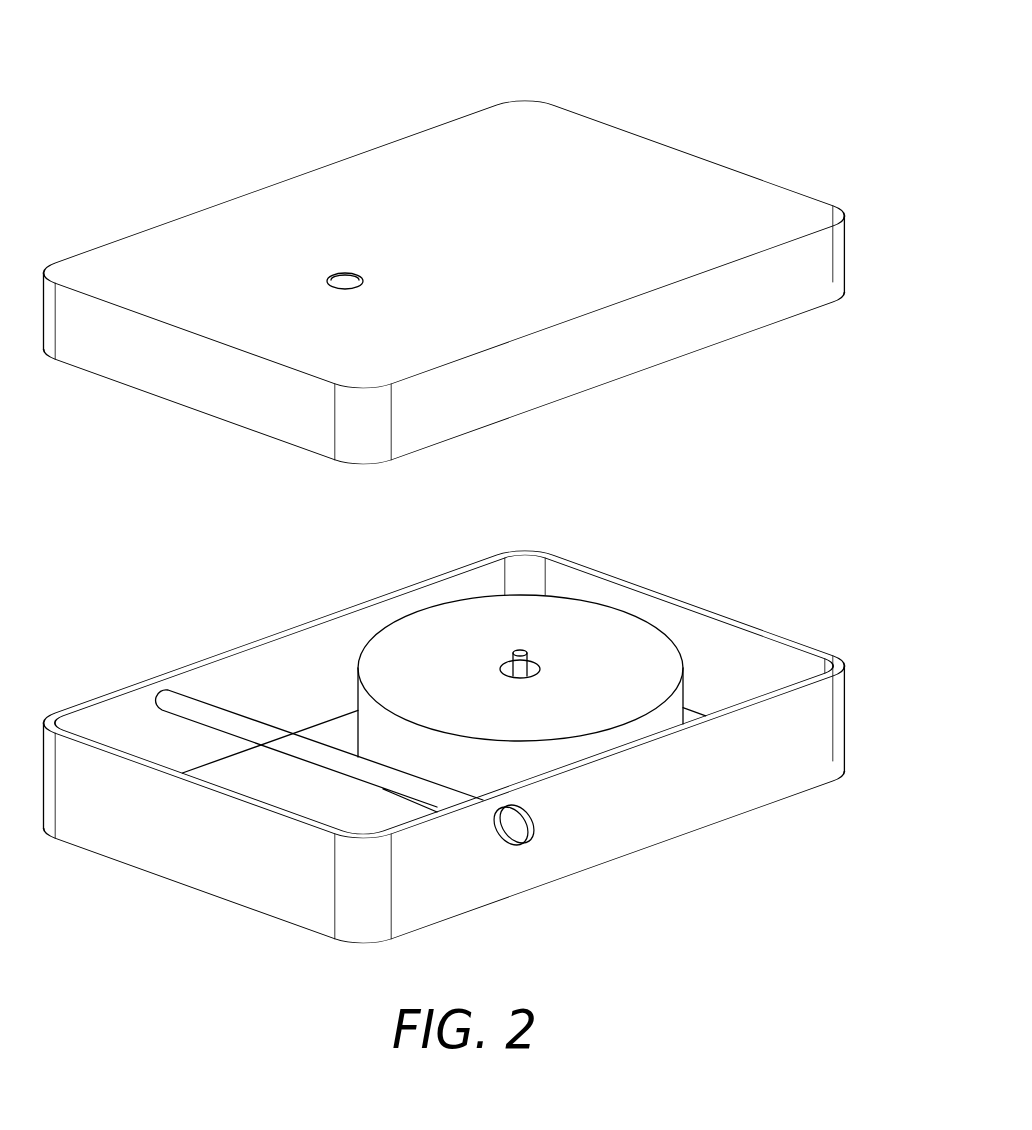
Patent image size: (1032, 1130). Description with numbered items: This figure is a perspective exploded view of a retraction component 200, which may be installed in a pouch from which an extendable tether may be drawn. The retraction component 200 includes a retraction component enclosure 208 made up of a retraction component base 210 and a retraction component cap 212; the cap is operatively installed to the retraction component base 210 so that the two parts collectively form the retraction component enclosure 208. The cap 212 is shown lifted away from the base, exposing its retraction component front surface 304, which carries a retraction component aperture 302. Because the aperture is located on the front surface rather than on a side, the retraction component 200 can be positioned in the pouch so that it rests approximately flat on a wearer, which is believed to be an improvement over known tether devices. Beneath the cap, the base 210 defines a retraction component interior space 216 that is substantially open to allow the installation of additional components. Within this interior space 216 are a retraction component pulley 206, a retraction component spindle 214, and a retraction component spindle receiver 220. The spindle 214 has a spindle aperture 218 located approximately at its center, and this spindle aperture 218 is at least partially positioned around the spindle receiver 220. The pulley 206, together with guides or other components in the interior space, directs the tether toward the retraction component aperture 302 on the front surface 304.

The retraction component 200 is at (630, 101).
The retraction component cap 212 is at (722, 180).
The retraction component front surface 304 is at (560, 227).
The retraction component aperture 302 is at (345, 271).
The retraction component enclosure 208 is at (700, 349).
The retraction component base 210 is at (810, 723).
The retraction component interior space 216 is at (320, 653).
The retraction component spindle 214 is at (595, 618).
The spindle aperture 218 is at (541, 670).
The retraction component spindle receiver 220 is at (515, 650).
The retraction component pulley 206 is at (205, 703).